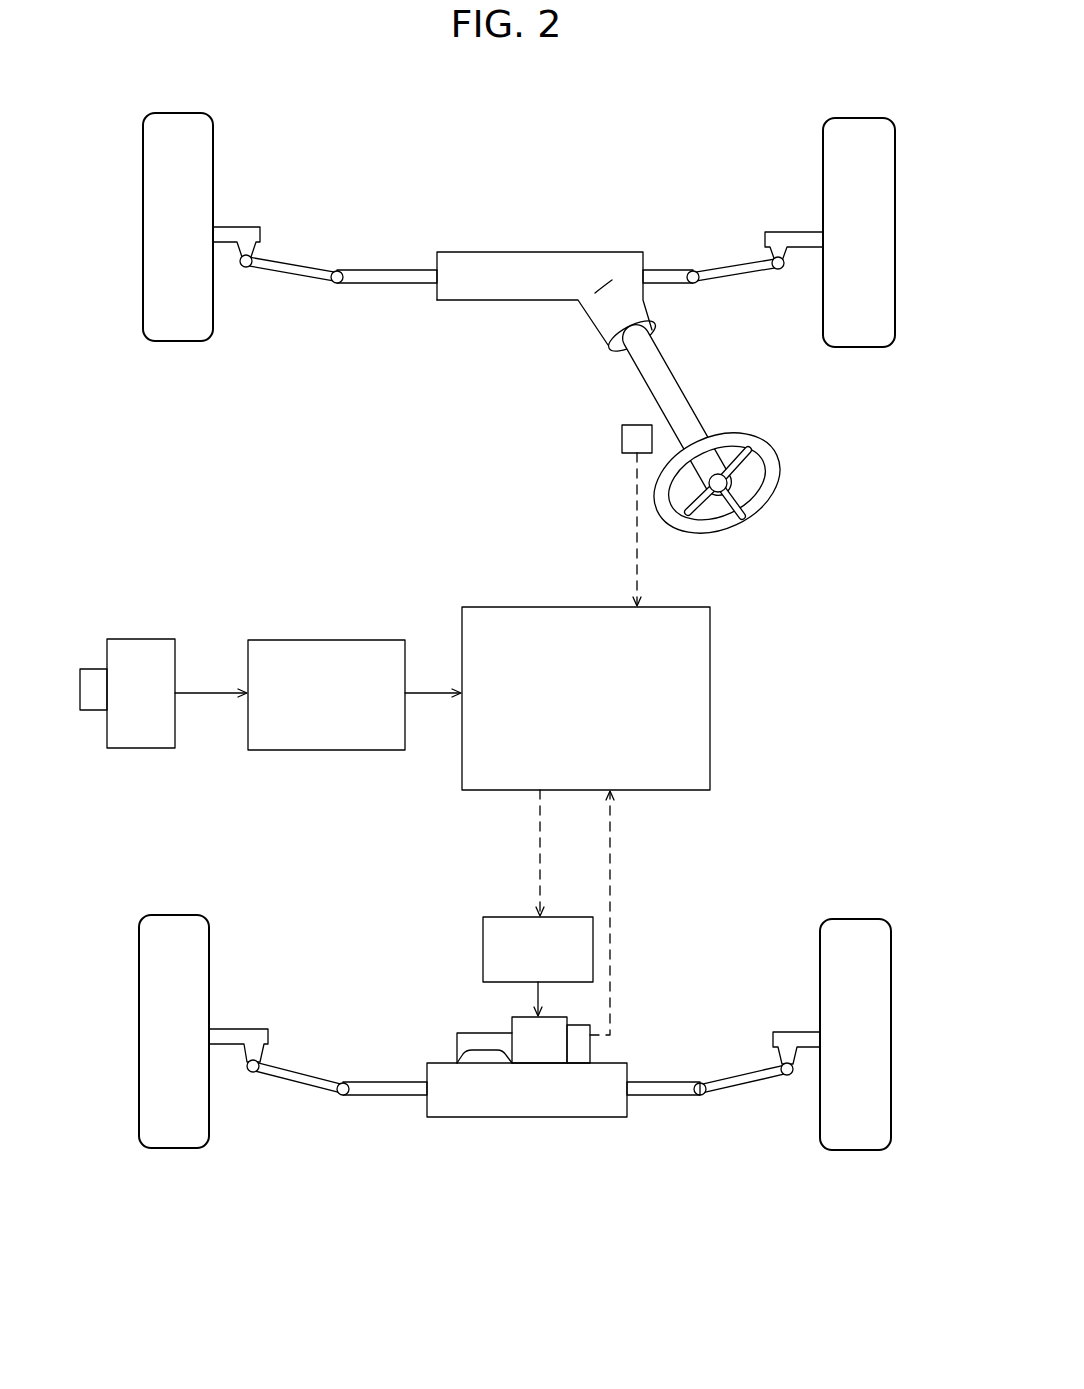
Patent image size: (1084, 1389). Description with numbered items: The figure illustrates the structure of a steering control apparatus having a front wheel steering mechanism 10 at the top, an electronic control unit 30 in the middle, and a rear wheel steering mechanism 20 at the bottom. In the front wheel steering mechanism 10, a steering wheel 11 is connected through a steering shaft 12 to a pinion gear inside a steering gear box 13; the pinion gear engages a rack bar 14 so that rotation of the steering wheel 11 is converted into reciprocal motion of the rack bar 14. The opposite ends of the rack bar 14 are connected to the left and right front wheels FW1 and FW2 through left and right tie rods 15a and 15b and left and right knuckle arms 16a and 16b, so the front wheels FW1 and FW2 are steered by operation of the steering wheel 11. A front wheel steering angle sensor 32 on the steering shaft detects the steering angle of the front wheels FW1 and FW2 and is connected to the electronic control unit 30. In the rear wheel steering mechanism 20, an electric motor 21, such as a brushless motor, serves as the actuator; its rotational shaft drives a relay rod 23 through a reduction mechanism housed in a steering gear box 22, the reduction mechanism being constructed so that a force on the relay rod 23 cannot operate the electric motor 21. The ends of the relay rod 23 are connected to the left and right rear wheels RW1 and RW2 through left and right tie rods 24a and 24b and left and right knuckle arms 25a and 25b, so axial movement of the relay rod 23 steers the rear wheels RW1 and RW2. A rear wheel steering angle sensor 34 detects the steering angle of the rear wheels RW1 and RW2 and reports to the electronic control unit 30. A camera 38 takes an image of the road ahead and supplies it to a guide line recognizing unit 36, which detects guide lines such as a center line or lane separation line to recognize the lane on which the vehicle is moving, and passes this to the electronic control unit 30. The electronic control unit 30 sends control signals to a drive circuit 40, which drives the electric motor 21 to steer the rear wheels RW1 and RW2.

The left front wheel FW1 is at (175, 112).
The right front wheel FW2 is at (858, 118).
The left rear wheel RW1 is at (175, 1148).
The right rear wheel RW2 is at (855, 1150).
The front wheel steering mechanism 10 is at (593, 315).
The steering wheel 11 is at (782, 447).
The steering shaft 12 is at (676, 370).
The steering gear box 13 is at (580, 252).
The rack bar 14 is at (398, 268).
The left tie rod 15a is at (308, 268).
The right tie rod 15b is at (709, 266).
The left knuckle arm 16a is at (240, 227).
The right knuckle arm 16b is at (782, 232).
The rear wheel steering mechanism 20 is at (569, 1009).
The electric motor 21 is at (528, 1016).
The steering gear box 22 is at (630, 1073).
The relay rod 23 is at (377, 1080).
The left tie rod 24a is at (298, 1092).
The right tie rod 24b is at (748, 1093).
The left knuckle arm 25a is at (253, 1029).
The right knuckle arm 25b is at (790, 1031).
The electronic control unit 30 is at (712, 706).
The front wheel steering angle sensor 32 is at (620, 433).
The rear wheel steering angle sensor 34 is at (592, 1047).
The guide line recognizing unit 36 is at (322, 640).
The camera 38 is at (142, 639).
The drive circuit 40 is at (505, 917).